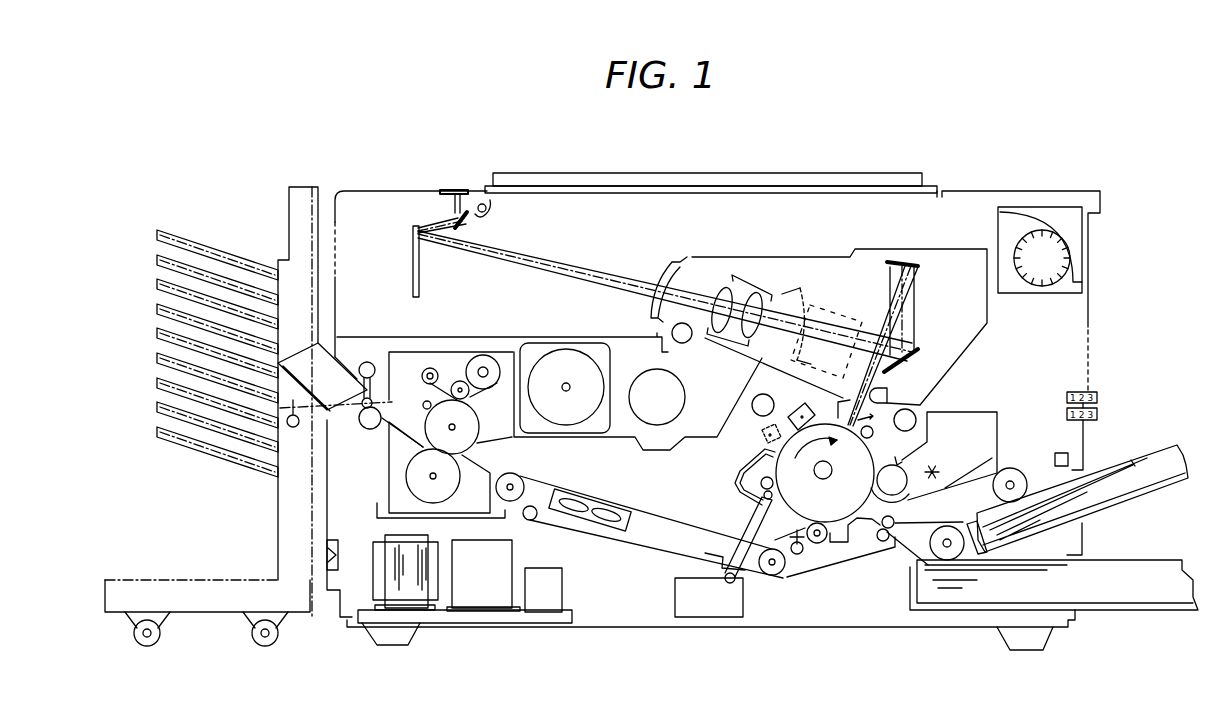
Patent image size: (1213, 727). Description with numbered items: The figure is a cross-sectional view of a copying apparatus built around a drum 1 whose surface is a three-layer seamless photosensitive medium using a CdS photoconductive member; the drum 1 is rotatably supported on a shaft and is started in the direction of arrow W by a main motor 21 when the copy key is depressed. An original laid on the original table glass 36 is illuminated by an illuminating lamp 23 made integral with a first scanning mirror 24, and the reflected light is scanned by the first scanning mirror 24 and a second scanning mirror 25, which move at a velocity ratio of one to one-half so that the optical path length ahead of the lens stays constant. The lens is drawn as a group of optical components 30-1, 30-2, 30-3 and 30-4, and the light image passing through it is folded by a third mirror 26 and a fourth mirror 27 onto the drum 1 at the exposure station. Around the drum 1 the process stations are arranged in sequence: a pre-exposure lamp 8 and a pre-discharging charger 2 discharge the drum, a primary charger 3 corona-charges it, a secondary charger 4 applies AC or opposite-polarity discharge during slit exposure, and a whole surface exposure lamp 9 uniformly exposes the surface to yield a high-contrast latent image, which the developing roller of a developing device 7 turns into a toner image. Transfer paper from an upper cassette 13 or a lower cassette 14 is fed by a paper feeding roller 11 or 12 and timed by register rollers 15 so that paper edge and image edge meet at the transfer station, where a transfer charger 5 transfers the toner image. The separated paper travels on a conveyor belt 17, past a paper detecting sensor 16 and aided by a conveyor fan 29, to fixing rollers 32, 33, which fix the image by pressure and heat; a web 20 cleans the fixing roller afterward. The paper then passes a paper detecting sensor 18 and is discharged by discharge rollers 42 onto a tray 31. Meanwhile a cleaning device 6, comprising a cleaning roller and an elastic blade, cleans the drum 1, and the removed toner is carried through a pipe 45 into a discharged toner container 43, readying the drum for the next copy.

The drum 1 is at (859, 494).
The pre-discharging charger 2 is at (762, 442).
The primary charger 3 is at (813, 412).
The secondary charger 4 is at (874, 413).
The transfer charger 5 is at (832, 545).
The cleaning device 6 is at (760, 483).
The developing device 7 is at (907, 466).
The pre-exposure lamp 8 is at (755, 414).
The whole surface exposure lamp 9 is at (917, 409).
The paper feeding roller 11 is at (1013, 470).
The paper feeding roller 12 is at (935, 540).
The upper cassette 13 is at (1158, 456).
The lower cassette 14 is at (972, 598).
The register rollers 15 is at (882, 542).
The paper detecting sensor 16 is at (797, 555).
The conveyor belt 17 is at (656, 553).
The paper detecting sensor 18 is at (368, 362).
The web 20 is at (443, 383).
The main motor 21 is at (565, 413).
The illuminating lamp 23 is at (497, 209).
The first scanning mirror 24 is at (467, 224).
The second scanning mirror 25 is at (420, 285).
The third mirror 26 is at (909, 372).
The fourth mirror 27 is at (918, 265).
The conveyor fan 29 is at (620, 527).
The lens 30-1 is at (748, 288).
The slit plate 30-2 is at (686, 270).
The filter 30-3 is at (798, 307).
The optical element 30-4 is at (838, 317).
The tray 31 is at (323, 417).
The fixing roller 32 is at (413, 481).
The fixing roller 33 is at (430, 422).
The original table glass 36 is at (598, 190).
The discharge rollers 42 is at (368, 430).
The discharged toner container 43 is at (716, 618).
The pipe 45 is at (743, 523).